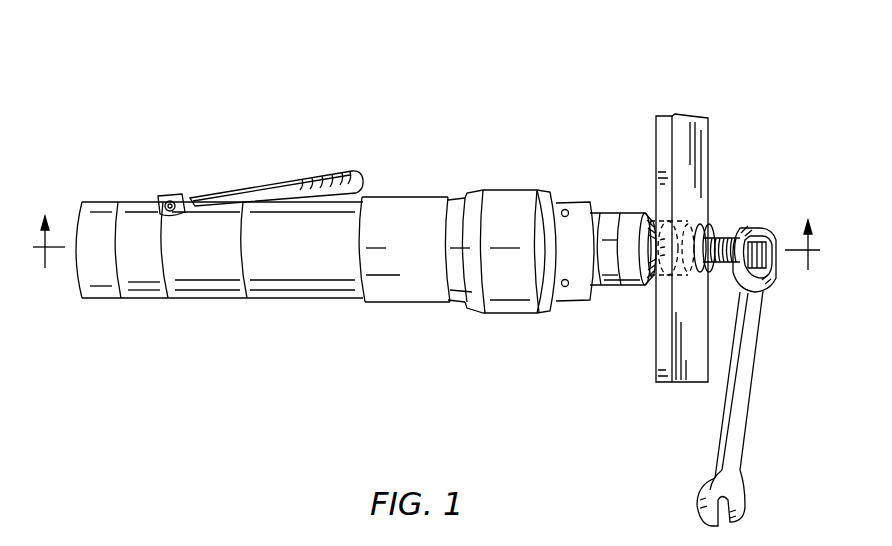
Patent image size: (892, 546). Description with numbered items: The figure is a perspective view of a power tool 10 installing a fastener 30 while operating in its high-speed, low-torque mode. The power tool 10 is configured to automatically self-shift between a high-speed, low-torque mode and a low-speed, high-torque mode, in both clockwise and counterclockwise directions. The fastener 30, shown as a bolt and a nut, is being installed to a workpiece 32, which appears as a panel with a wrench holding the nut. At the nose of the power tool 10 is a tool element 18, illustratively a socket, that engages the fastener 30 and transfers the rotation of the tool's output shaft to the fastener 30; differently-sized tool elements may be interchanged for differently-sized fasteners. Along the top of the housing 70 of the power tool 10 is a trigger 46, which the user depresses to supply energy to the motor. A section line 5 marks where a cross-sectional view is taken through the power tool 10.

The power tool 10 is at (742, 85).
The tool element 18 is at (662, 278).
The fastener 30 is at (730, 203).
The workpiece 32 is at (687, 148).
The trigger 46 is at (284, 191).
The housing 70 is at (418, 206).
The section line 5- 5 is at (426, 228).